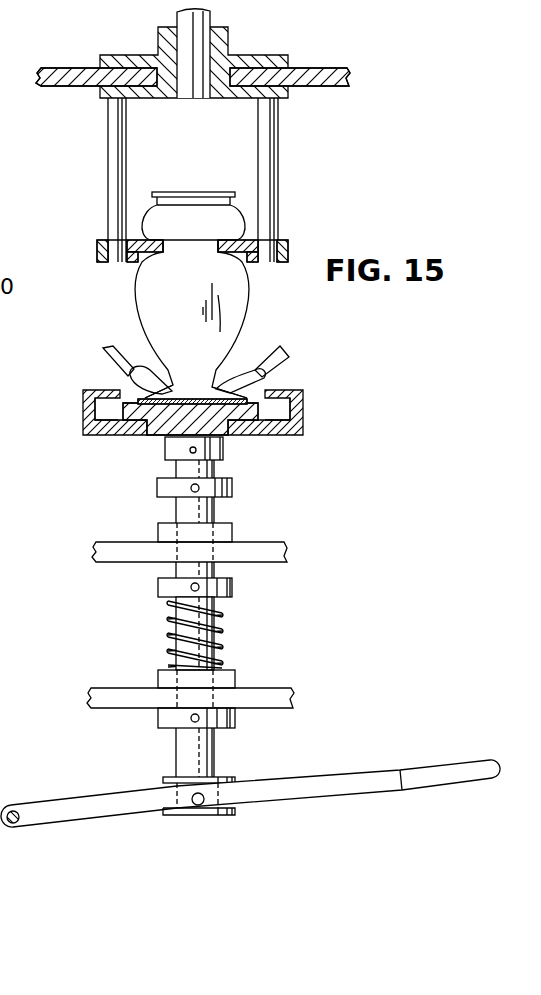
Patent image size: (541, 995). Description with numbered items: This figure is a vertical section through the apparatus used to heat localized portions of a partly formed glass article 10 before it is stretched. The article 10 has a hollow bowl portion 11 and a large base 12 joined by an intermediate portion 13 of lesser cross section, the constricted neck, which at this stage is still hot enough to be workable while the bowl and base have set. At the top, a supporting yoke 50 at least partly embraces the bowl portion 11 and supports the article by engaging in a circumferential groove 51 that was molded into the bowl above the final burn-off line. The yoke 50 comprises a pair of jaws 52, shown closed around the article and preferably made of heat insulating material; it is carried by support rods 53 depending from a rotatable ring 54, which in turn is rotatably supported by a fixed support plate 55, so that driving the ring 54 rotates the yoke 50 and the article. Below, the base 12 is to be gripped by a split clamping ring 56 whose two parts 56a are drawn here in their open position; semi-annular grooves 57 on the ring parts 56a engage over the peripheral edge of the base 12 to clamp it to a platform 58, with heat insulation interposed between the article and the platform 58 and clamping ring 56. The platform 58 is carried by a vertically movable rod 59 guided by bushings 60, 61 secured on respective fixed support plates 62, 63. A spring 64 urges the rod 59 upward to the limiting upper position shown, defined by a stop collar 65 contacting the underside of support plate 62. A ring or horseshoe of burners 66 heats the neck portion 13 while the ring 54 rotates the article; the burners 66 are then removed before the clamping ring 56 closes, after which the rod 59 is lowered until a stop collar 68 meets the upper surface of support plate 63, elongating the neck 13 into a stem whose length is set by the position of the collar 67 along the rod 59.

The hollow glass article 10 is at (208, 319).
The bowl portion 11 is at (238, 312).
The base 12 is at (245, 393).
The intermediate portion 13 is at (200, 385).
The supporting yoke 50 is at (297, 195).
The circumferential groove 51 is at (200, 247).
The jaws 52 is at (137, 240).
The support rods 53 is at (115, 140).
The rotatable ring 54 is at (308, 76).
The fixed support plate 55 is at (223, 87).
The split clamping ring 56 is at (201, 434).
The ring parts 56a is at (98, 406).
The semi-annular grooves 57 is at (107, 393).
The platform 58 is at (118, 436).
The vertically movable rod 59 is at (212, 508).
The bushing 60 is at (235, 682).
The bushing 61 is at (228, 533).
The fixed support plate 62 is at (293, 697).
The fixed support plate 63 is at (273, 548).
The spring 64 is at (217, 632).
The stop collar 65 is at (235, 718).
The burners 66 is at (112, 360).
The collar 67 is at (233, 588).
The stop collar 68 is at (232, 488).